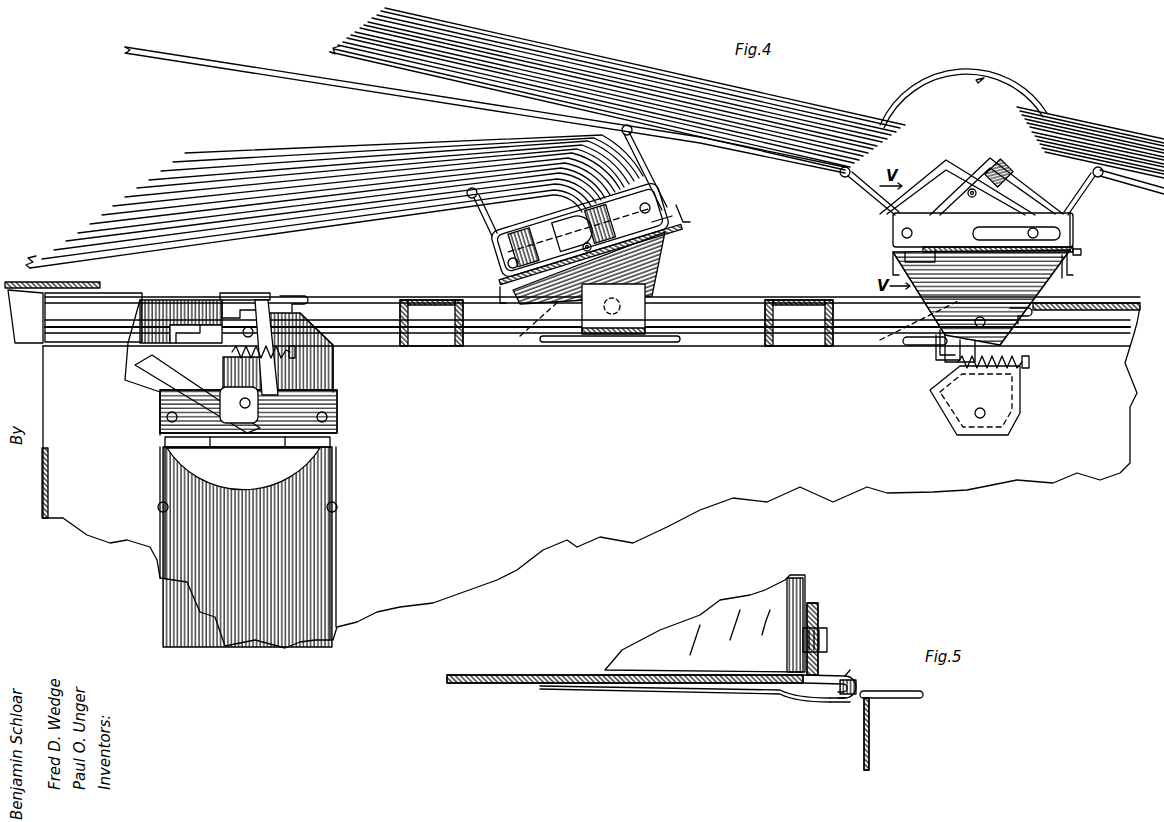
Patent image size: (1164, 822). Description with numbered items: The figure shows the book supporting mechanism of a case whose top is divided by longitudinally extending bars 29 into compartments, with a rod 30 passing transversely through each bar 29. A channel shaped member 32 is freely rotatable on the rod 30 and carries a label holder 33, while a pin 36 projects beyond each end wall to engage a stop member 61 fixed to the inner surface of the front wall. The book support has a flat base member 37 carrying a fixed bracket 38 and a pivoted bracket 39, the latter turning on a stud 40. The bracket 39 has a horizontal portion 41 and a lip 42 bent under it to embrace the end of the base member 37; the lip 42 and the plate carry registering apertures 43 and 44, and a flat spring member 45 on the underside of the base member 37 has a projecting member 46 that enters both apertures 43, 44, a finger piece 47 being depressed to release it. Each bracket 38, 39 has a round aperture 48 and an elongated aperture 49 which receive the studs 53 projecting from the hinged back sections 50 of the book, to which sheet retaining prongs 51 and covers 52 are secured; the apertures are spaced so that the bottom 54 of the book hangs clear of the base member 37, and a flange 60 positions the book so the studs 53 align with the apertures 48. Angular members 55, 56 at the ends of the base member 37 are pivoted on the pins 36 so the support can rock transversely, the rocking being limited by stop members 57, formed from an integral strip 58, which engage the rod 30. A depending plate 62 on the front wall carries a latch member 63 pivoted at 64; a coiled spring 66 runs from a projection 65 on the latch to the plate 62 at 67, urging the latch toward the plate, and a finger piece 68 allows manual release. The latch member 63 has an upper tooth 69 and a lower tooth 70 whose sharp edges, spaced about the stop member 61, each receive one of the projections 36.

In FIG. 4, the longitudinally extending bar 29 is at (425, 298).
In FIG. 4, the rod 30 is at (376, 322).
In FIG. 4, the channel shaped member 32 is at (586, 337).
In FIG. 4, the label holder 33 is at (545, 343).
In FIG. 4, the pin 36 is at (648, 291).
In FIG. 4, the base member 37 is at (683, 246).
In FIG. 5, the base member 37 is at (484, 683).
In FIG. 4, the bracket 38 is at (168, 404).
In FIG. 4, the bracket 39 is at (1074, 214).
In FIG. 5, the bracket 39 is at (820, 610).
In FIG. 4, the stud 40 is at (1080, 252).
In FIG. 4, the horizontal portion 41 is at (1072, 247).
In FIG. 5, the horizontal portion 41 is at (832, 678).
In FIG. 4, the lip 42 is at (981, 297).
In FIG. 5, the lip 42 is at (858, 696).
In FIG. 5, the aperture 43 is at (838, 694).
In FIG. 5, the aperture 44 is at (862, 680).
In FIG. 5, the flat spring member 45 is at (684, 694).
In FIG. 5, the projecting member 46 is at (852, 692).
In FIG. 4, the finger piece 47 is at (928, 266).
In FIG. 5, the finger piece 47 is at (900, 698).
In FIG. 5, the round aperture 48 is at (828, 634).
In FIG. 4, the elongated aperture 49 is at (975, 229).
In FIG. 4, the back section 50 is at (553, 215).
In FIG. 4, the sheet retaining prong 51 is at (928, 90).
In FIG. 5, the sheet retaining prong 51 is at (712, 622).
In FIG. 4, the cover 52 is at (377, 213).
In FIG. 4, the stud 53 is at (650, 206).
In FIG. 5, the stud 53 is at (829, 643).
In FIG. 4, the bottom of the book 54 is at (545, 232).
In FIG. 4, the angular member 55 is at (660, 266).
In FIG. 4, the angular member 56 is at (1065, 270).
In FIG. 5, the angular member 56 is at (871, 757).
In FIG. 4, the stop member 57 is at (498, 295).
In FIG. 4, the integral strip 58 is at (522, 333).
In FIG. 4, the flange 60 is at (675, 221).
In FIG. 4, the stop member 61 is at (232, 316).
In FIG. 4, the depending plate 62 is at (186, 369).
In FIG. 4, the latch member 63 is at (337, 393).
In FIG. 4, the pivot 64 is at (243, 410).
In FIG. 4, the projection 65 is at (298, 352).
In FIG. 4, the coiled spring 66 is at (256, 360).
In FIG. 4, the spring securement point 67 is at (180, 350).
In FIG. 4, the finger piece 68 is at (287, 296).
In FIG. 4, the upper tooth 69 is at (247, 326).
In FIG. 4, the lower tooth 70 is at (242, 352).